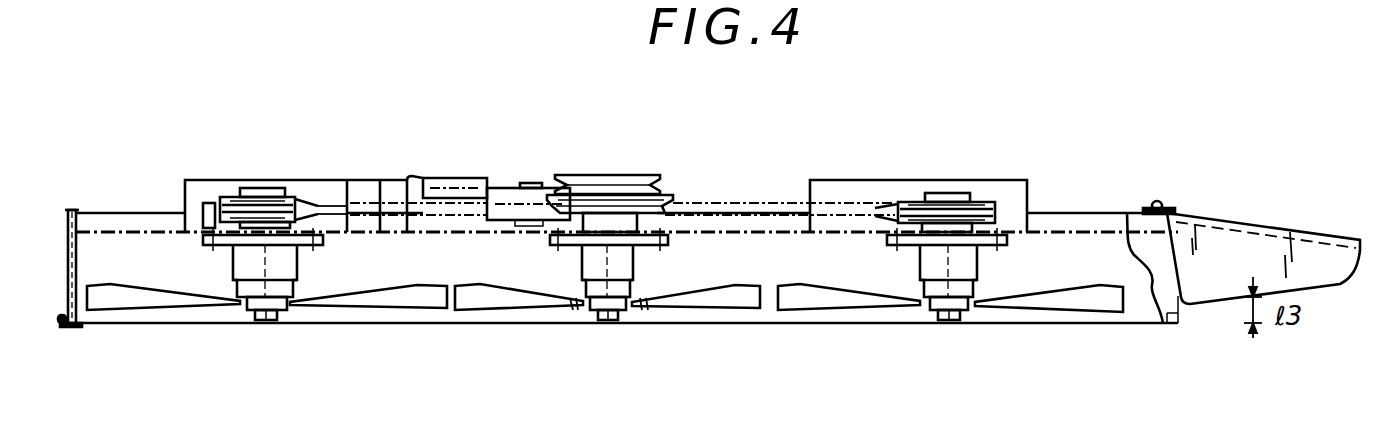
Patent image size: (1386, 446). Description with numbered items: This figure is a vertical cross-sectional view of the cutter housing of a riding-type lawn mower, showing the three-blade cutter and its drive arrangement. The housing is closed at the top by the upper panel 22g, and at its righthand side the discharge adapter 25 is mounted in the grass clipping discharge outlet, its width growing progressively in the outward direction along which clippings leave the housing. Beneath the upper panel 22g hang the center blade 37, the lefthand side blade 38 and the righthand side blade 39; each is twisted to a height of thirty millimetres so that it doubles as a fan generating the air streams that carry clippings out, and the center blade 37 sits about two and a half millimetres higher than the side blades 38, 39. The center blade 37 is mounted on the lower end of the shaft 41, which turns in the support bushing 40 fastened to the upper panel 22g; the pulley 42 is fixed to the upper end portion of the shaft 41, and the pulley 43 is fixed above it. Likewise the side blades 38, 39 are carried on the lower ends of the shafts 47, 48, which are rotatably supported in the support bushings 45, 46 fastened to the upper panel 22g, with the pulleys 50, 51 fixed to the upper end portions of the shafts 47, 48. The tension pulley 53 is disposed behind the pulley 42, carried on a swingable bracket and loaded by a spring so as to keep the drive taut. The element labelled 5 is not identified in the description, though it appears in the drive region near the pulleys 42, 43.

The drive unit 5 is at (530, 183).
The upper panel 22g is at (788, 215).
The discharge adapter 25 is at (1240, 222).
The center blade 37 is at (737, 312).
The lefthand side blade 38 is at (418, 310).
The righthand side blade 39 is at (1089, 315).
The support bushing 40 is at (578, 268).
The shaft 41 is at (603, 320).
The pulley 42 is at (668, 212).
The pulley 43 is at (663, 192).
The support bushing 45 is at (237, 262).
The support bushing 46 is at (917, 265).
The shaft 47 is at (266, 320).
The shaft 48 is at (947, 320).
The pulley 50 is at (297, 186).
The pulley 51 is at (980, 194).
The tension pulley 53 is at (500, 178).